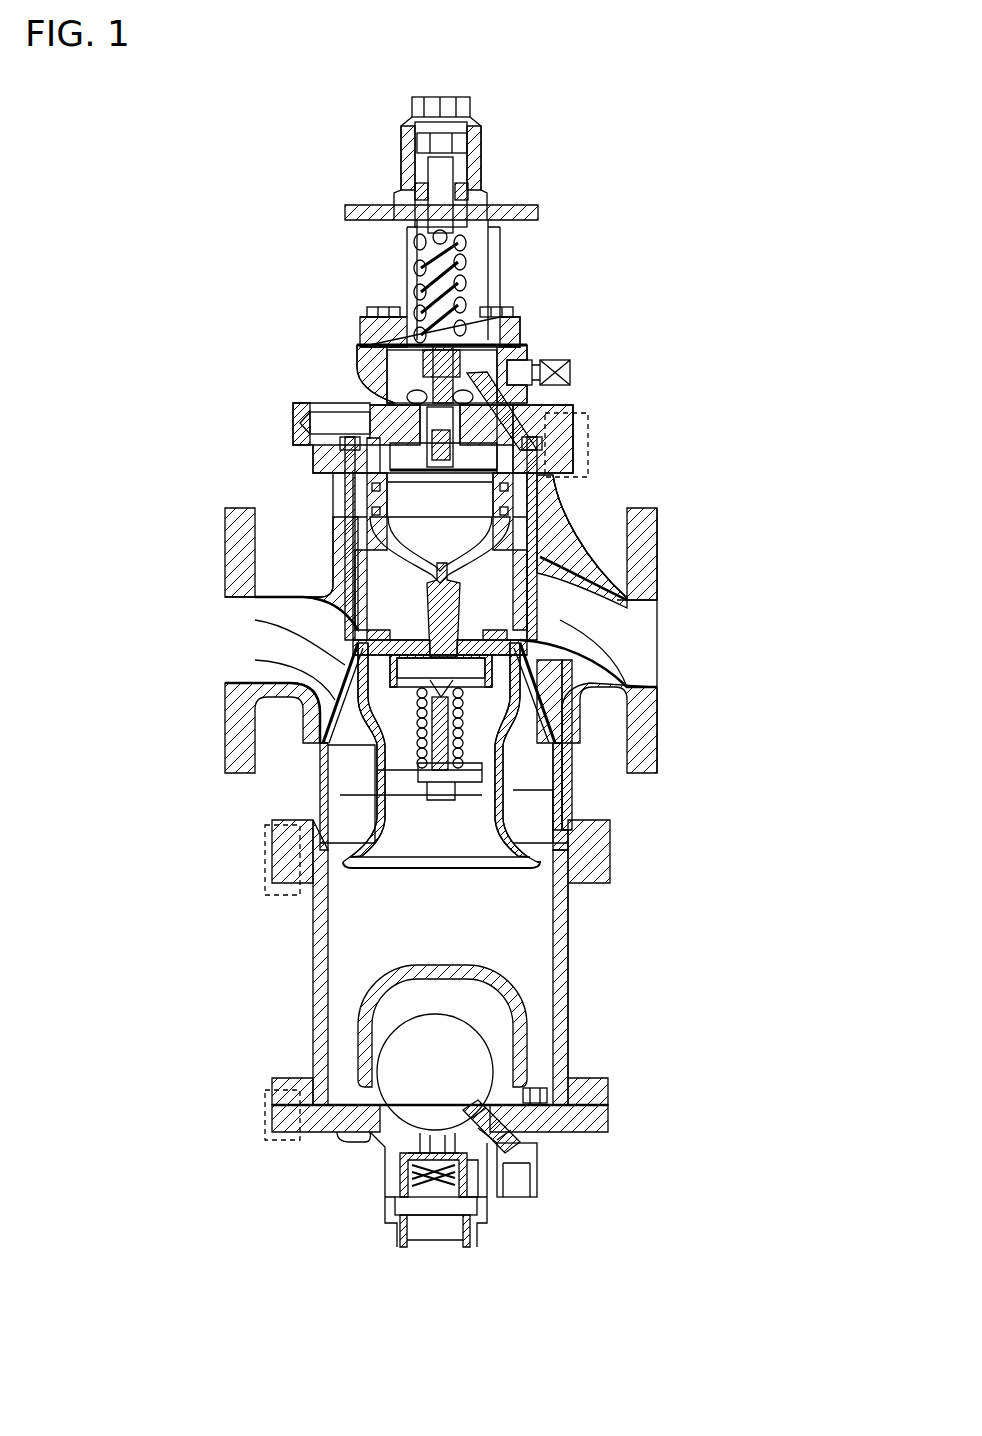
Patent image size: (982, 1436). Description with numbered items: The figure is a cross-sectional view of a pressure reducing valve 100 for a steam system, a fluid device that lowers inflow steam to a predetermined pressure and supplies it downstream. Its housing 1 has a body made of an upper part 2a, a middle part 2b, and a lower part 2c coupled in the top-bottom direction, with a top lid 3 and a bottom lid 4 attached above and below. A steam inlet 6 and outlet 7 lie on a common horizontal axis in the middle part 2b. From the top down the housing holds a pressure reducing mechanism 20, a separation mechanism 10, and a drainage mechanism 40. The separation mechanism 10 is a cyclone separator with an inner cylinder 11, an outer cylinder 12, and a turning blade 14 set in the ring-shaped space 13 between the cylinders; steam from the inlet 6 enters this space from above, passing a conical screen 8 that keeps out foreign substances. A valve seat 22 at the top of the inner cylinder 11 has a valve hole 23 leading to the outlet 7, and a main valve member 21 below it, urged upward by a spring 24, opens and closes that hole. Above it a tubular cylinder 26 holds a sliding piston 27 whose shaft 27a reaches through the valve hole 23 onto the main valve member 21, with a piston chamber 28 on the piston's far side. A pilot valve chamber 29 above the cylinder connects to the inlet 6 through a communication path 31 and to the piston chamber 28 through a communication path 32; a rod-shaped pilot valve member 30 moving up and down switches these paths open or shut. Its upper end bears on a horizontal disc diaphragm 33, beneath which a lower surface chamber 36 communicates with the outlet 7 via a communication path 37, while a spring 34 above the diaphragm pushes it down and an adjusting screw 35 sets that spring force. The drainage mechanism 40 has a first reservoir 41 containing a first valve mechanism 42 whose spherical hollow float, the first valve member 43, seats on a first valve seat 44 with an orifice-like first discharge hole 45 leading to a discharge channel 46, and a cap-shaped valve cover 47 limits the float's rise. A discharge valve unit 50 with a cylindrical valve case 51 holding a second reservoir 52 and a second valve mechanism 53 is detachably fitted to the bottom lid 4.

The pressure reducing valve 100 is at (250, 96).
The housing 1 is at (228, 523).
The upper part 2a is at (578, 446).
The middle part 2b is at (643, 560).
The lower part 2c is at (565, 942).
The top lid 3 is at (362, 330).
The bottom lid 4 is at (300, 1115).
The inlet 6 is at (252, 644).
The outlet 7 is at (622, 644).
The conical screen 8 is at (304, 645).
The separation mechanism 10 is at (402, 684).
The inner cylinder 11 is at (602, 739).
The outer cylinder 12 is at (602, 834).
The ring-shaped space 13 is at (362, 769).
The turning blade 14 is at (334, 800).
The pressure reducing mechanism 20 is at (355, 383).
The main valve member 21 is at (482, 667).
The valve seat 22 is at (334, 622).
The valve hole 23 is at (470, 627).
The spring 24 is at (425, 731).
The tubular cylinder 26 is at (515, 522).
The piston 27 is at (392, 493).
The shaft 27a is at (612, 587).
The piston chamber 28 is at (482, 492).
The pilot valve chamber 29 is at (505, 416).
The pilot valve member 30 is at (470, 380).
The communication path 31 is at (382, 541).
The communication path 32 is at (548, 428).
The diaphragm 33 is at (392, 370).
The spring 34 is at (488, 296).
The adjusting screw 35 is at (456, 175).
The lower surface chamber 36 is at (500, 345).
The communication path 37 is at (475, 472).
The drainage mechanism 40 is at (343, 997).
The first reservoir 41 is at (532, 1010).
The first valve mechanism 42 is at (472, 1037).
The first valve member 43 is at (395, 1037).
The first valve seat 44 is at (573, 1110).
The first discharge hole 45 is at (514, 1130).
The discharge channel 46 is at (533, 1175).
The valve cover 47 is at (418, 962).
The discharge valve unit 50 is at (405, 1250).
The valve case 51 is at (476, 1165).
The second reservoir 52 is at (405, 1173).
The second valve mechanism 53 is at (442, 1200).